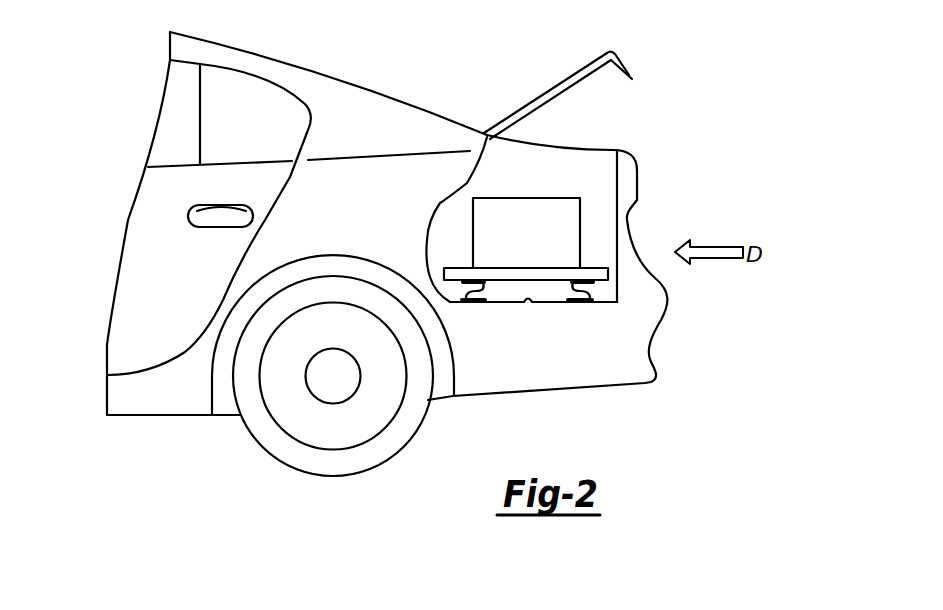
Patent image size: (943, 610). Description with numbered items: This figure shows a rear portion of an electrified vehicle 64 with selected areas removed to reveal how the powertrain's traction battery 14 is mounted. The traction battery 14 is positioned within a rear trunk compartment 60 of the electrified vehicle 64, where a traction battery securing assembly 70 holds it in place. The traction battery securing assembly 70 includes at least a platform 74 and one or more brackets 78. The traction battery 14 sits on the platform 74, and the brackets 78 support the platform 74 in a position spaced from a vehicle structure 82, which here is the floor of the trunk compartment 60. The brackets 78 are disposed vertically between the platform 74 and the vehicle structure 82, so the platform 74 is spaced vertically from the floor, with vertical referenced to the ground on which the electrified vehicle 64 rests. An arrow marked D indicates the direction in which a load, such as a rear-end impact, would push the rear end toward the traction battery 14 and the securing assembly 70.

The rear trunk compartment 60 is at (641, 117).
The electrified vehicle 64 is at (127, 333).
The traction battery 14 is at (527, 198).
The platform 74 is at (461, 267).
The brackets 78 is at (464, 303).
The vehicle structure 82 is at (528, 300).
The traction battery securing assembly 70 is at (620, 295).